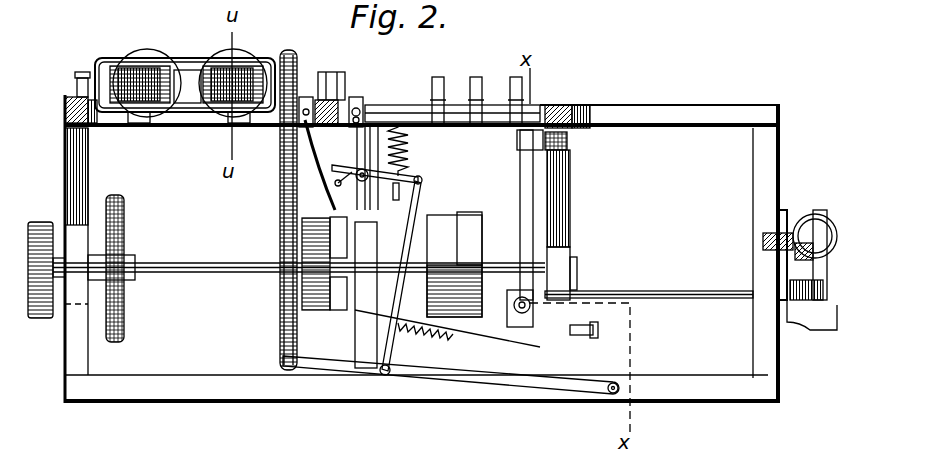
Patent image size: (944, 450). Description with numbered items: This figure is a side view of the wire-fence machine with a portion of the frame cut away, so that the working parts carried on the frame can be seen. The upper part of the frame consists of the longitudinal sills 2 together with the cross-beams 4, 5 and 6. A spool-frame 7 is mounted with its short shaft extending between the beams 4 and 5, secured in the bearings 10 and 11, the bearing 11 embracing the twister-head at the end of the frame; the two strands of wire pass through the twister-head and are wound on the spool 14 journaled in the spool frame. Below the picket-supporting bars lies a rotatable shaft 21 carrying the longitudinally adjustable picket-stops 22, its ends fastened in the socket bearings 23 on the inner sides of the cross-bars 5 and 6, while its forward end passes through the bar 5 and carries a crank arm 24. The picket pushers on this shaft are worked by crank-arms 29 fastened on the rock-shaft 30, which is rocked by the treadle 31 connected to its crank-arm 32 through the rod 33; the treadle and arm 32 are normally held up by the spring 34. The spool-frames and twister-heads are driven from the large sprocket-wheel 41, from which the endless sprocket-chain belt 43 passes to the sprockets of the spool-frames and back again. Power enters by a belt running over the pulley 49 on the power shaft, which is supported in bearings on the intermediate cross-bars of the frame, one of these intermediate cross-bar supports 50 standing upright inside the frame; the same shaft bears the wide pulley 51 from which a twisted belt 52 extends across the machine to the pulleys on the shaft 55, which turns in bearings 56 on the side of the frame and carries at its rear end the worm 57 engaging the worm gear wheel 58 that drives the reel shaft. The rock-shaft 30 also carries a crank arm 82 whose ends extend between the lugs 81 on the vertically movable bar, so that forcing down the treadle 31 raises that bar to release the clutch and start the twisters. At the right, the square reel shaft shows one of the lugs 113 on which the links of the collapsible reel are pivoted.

The longitudinal sills 2 is at (700, 112).
The cross-beam 4 is at (57, 120).
The cross-beam 5 is at (313, 100).
The cross-beam 6 is at (575, 130).
The spool-frame 7 is at (193, 60).
The bearing 10 is at (76, 80).
The bearing 11 is at (357, 100).
The spool 14 is at (200, 108).
The rotatable shaft 21 is at (385, 104).
The picket-stop 22 is at (444, 80).
The socket bearing 23 is at (548, 104).
The crank arm 24 is at (332, 85).
The crank-arm 29 is at (362, 153).
The rock-shaft 30 is at (422, 178).
The treadle 31 is at (505, 378).
The crank-arm 32 is at (395, 200).
The rod 33 is at (420, 276).
The spring 34 is at (408, 143).
The large sprocket-wheel 41 is at (283, 245).
The endless sprocket-chain belt 43 is at (278, 312).
The pulley 49 is at (41, 254).
The standard 50 is at (572, 253).
The wide pulley 51 is at (445, 237).
The twisted belt 52 is at (466, 244).
The shaft 55 is at (682, 291).
The bearing 56 is at (826, 322).
The worm 57 is at (828, 255).
The worm gear wheel 58 is at (827, 237).
The transversely extending lug 81 is at (335, 184).
The crank arm 82 is at (330, 165).
The lug 113 is at (800, 232).